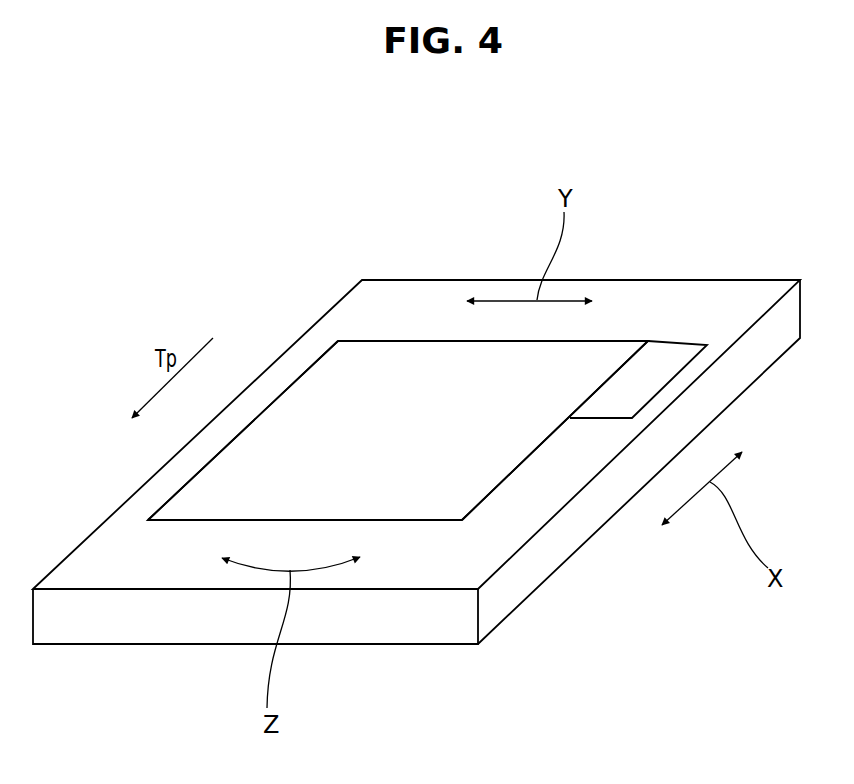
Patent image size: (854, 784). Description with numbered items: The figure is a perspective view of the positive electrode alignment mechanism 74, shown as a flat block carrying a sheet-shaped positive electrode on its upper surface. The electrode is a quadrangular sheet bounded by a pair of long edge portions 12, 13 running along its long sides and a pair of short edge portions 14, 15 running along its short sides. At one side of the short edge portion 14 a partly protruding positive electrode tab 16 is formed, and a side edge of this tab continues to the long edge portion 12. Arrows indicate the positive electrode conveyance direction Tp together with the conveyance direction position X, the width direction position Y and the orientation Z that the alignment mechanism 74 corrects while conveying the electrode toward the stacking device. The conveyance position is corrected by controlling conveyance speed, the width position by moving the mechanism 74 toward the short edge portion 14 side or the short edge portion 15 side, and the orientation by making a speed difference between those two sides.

The long edge portion 12 is at (388, 340).
The long edge portion 13 is at (423, 521).
The short edge portion 14 is at (483, 503).
The short edge portion 15 is at (296, 378).
The positive electrode tab 16 is at (663, 366).
The positive electrode alignment mechanism 74 is at (736, 295).